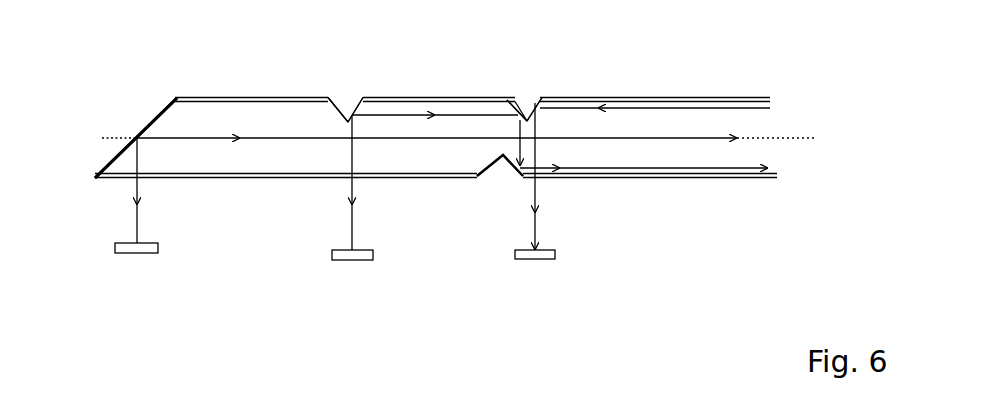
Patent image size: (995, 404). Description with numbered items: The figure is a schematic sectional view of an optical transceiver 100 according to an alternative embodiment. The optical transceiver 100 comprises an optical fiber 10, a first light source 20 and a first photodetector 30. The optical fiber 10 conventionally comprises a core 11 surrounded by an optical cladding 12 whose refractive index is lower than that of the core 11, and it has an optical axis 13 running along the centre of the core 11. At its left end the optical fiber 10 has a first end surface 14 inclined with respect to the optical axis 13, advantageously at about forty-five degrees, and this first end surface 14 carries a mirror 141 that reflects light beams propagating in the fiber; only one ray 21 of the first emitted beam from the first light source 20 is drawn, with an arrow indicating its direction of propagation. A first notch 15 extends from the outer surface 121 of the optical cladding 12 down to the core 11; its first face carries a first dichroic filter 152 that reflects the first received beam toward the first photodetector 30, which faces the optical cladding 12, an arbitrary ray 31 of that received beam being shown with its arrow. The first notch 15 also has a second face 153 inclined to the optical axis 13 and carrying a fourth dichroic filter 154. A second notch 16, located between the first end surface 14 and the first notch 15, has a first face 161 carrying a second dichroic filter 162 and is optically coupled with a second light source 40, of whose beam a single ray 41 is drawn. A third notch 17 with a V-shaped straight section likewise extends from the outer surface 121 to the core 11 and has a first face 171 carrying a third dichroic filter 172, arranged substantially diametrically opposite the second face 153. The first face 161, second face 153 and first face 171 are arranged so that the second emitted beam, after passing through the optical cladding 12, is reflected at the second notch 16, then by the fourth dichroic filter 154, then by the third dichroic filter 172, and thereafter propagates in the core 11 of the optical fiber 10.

The optical transceiver 100 is at (77, 63).
The optical fiber 10 is at (755, 82).
The core 11 is at (247, 165).
The optical cladding 12 is at (228, 98).
The outer surface 121 is at (677, 95).
The optical axis 13 is at (787, 140).
The first end surface 14 is at (163, 112).
The mirror 141 is at (103, 168).
The first notch 15 is at (528, 90).
The first dichroic filter 152 is at (537, 108).
The second face 153 is at (508, 103).
The fourth dichroic filter 154 is at (518, 114).
The second notch 16 is at (349, 97).
The first face 161 is at (341, 112).
The second dichroic filter 162 is at (358, 105).
The third notch 17 is at (498, 192).
The first face 171 is at (507, 163).
The third dichroic filter 172 is at (521, 174).
The first light source 20 is at (148, 253).
The ray 21 is at (137, 227).
The first photodetector 30 is at (537, 260).
The ray 31 is at (537, 223).
The second light source 40 is at (357, 260).
The ray 41 is at (353, 233).